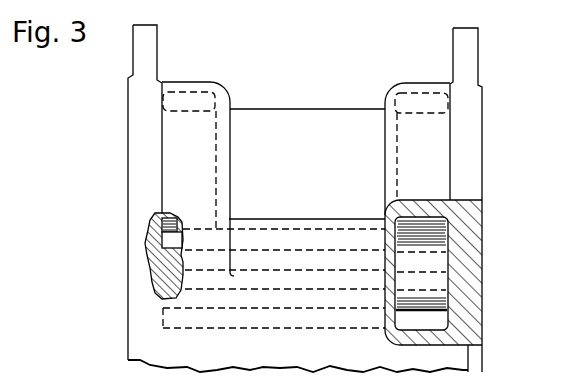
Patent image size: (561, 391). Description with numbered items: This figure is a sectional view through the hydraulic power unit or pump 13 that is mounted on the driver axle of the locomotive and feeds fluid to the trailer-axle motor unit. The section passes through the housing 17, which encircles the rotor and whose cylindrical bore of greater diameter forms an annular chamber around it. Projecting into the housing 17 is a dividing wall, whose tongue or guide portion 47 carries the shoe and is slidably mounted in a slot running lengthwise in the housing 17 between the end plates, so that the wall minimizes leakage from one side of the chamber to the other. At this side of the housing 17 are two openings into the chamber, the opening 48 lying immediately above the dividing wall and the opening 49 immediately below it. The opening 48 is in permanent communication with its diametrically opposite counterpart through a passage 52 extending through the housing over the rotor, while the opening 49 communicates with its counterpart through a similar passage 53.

The hydraulic power unit or pump 13 is at (483, 357).
The housing 17 is at (282, 107).
The tongue or guide portion 47 is at (158, 277).
The opening 48 is at (147, 243).
The opening 49 is at (163, 319).
The passage 52 is at (188, 100).
The passage 53 is at (420, 103).